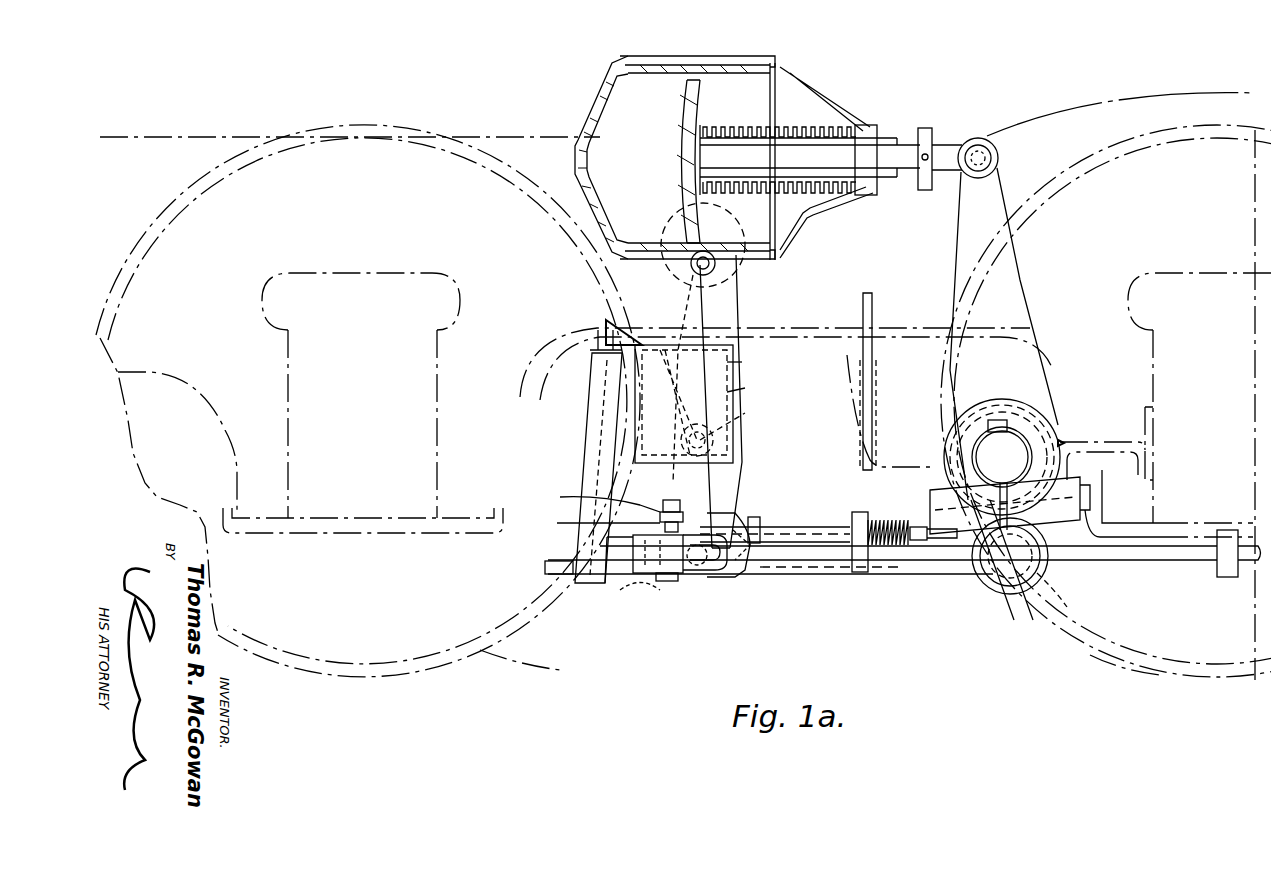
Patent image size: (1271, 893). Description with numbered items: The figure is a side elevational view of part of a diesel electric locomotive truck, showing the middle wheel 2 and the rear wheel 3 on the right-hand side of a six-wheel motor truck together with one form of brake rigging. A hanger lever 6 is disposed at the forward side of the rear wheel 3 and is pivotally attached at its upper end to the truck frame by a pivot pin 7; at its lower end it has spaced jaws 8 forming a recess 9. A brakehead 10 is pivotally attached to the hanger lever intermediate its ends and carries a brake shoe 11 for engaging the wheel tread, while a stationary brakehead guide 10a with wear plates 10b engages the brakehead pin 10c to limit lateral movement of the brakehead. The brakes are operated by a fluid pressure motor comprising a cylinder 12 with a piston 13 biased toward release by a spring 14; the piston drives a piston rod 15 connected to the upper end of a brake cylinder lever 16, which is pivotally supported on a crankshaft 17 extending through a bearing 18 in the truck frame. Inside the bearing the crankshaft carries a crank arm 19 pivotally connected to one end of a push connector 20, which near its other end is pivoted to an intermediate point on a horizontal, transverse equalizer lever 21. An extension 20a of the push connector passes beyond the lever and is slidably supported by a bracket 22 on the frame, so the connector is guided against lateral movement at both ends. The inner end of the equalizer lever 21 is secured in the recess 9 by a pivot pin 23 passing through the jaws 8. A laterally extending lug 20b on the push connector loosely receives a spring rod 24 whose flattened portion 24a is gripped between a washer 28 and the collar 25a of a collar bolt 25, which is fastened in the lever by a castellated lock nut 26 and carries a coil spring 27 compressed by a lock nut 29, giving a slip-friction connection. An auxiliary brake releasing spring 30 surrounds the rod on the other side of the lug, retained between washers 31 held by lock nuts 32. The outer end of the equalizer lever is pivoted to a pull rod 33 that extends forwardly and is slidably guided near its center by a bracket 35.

The middle wheel 2 is at (1105, 652).
The rear wheel 3 is at (488, 645).
The hanger lever 6 is at (740, 310).
The pivot pin 7 is at (690, 262).
The spaced jaws 8 is at (742, 580).
The recess 9 is at (697, 566).
The brakehead 10 is at (697, 425).
The stationary brakehead guide 10a is at (742, 362).
The wear plate 10b is at (745, 388).
The brakehead pin 10c is at (745, 413).
The brake shoe 11 is at (625, 330).
The cylinder 12 is at (605, 85).
The piston 13 is at (700, 85).
The spring 14 is at (820, 125).
The piston rod 15 is at (948, 150).
The brake cylinder lever 16 is at (958, 230).
The crankshaft 17 is at (1010, 450).
The bearing 18 is at (1064, 443).
The crank arm 19 is at (1035, 560).
The push connector 20 is at (940, 565).
The extension 20a is at (543, 568).
The laterally extending lug 20b is at (852, 525).
The equalizer lever 21 is at (640, 560).
The bracket 22 is at (590, 460).
The pivot pin 23 is at (710, 575).
The spring rod 24 is at (790, 527).
The flattened portion 24a is at (755, 516).
The collar bolt 25 is at (667, 583).
The collar 25a is at (607, 580).
The castellated lock nut 26 is at (650, 590).
The coil spring 27 is at (560, 523).
The washer 28 is at (682, 520).
The lock nut 29 is at (562, 497).
The auxiliary brake releasing spring 30 is at (884, 547).
The washer 31 is at (880, 517).
The lock nuts 32 is at (940, 510).
The pull rod 33 is at (830, 568).
The bracket 35 is at (1217, 570).